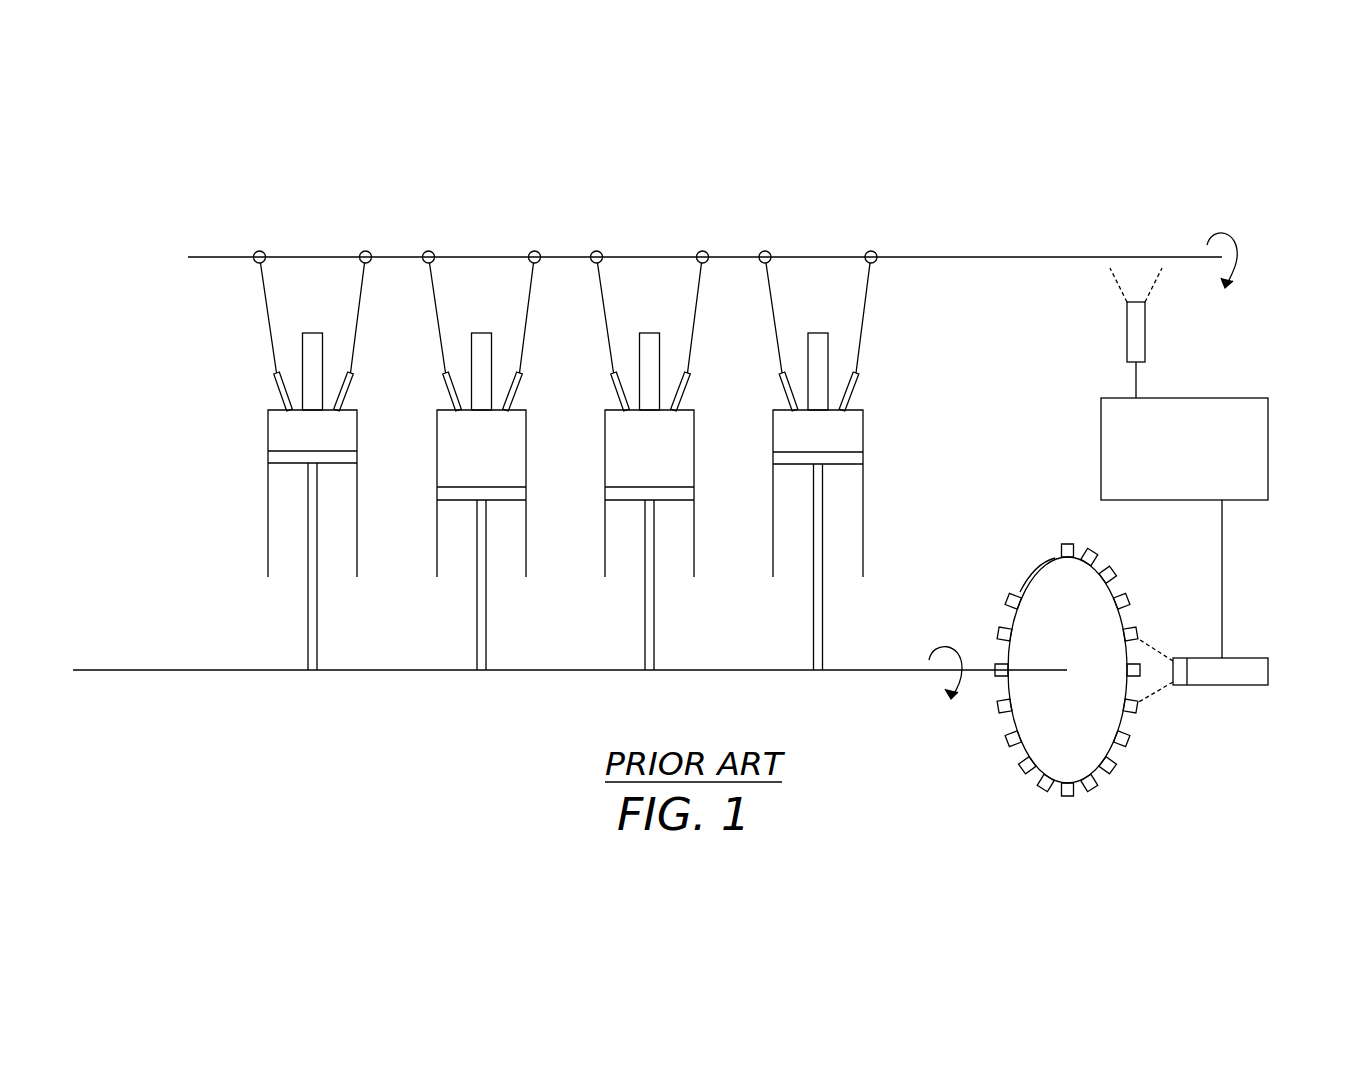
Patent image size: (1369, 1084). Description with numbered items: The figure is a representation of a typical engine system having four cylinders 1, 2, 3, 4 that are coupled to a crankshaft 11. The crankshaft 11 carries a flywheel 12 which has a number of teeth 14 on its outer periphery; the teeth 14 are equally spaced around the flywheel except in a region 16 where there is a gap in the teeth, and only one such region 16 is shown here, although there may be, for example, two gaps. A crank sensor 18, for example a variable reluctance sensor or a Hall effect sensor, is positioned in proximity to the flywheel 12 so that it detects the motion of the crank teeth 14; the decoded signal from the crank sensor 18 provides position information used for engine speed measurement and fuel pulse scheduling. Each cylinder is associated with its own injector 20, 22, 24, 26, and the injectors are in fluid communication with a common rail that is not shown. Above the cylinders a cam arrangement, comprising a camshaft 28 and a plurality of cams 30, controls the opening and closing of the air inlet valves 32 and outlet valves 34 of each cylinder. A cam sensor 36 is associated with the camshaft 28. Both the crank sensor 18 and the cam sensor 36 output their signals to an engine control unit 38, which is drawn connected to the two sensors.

The cylinder 1 is at (273, 437).
The cylinder 2 is at (442, 437).
The cylinder 3 is at (610, 437).
The cylinder 4 is at (778, 437).
The crankshaft 11 is at (168, 670).
The flywheel 12 is at (1095, 738).
The teeth 14 is at (1003, 747).
The region 16 is at (1030, 565).
The crank sensor 18 is at (1268, 668).
The injector 20 is at (309, 333).
The injector 22 is at (478, 333).
The injector 24 is at (646, 333).
The injector 26 is at (814, 333).
The camshaft 28 is at (1025, 257).
The cams 30 is at (258, 251).
The air inlet valve 32 is at (277, 380).
The outlet valve 34 is at (350, 381).
The cam sensor 36 is at (1127, 310).
The engine control unit 38 is at (1268, 408).